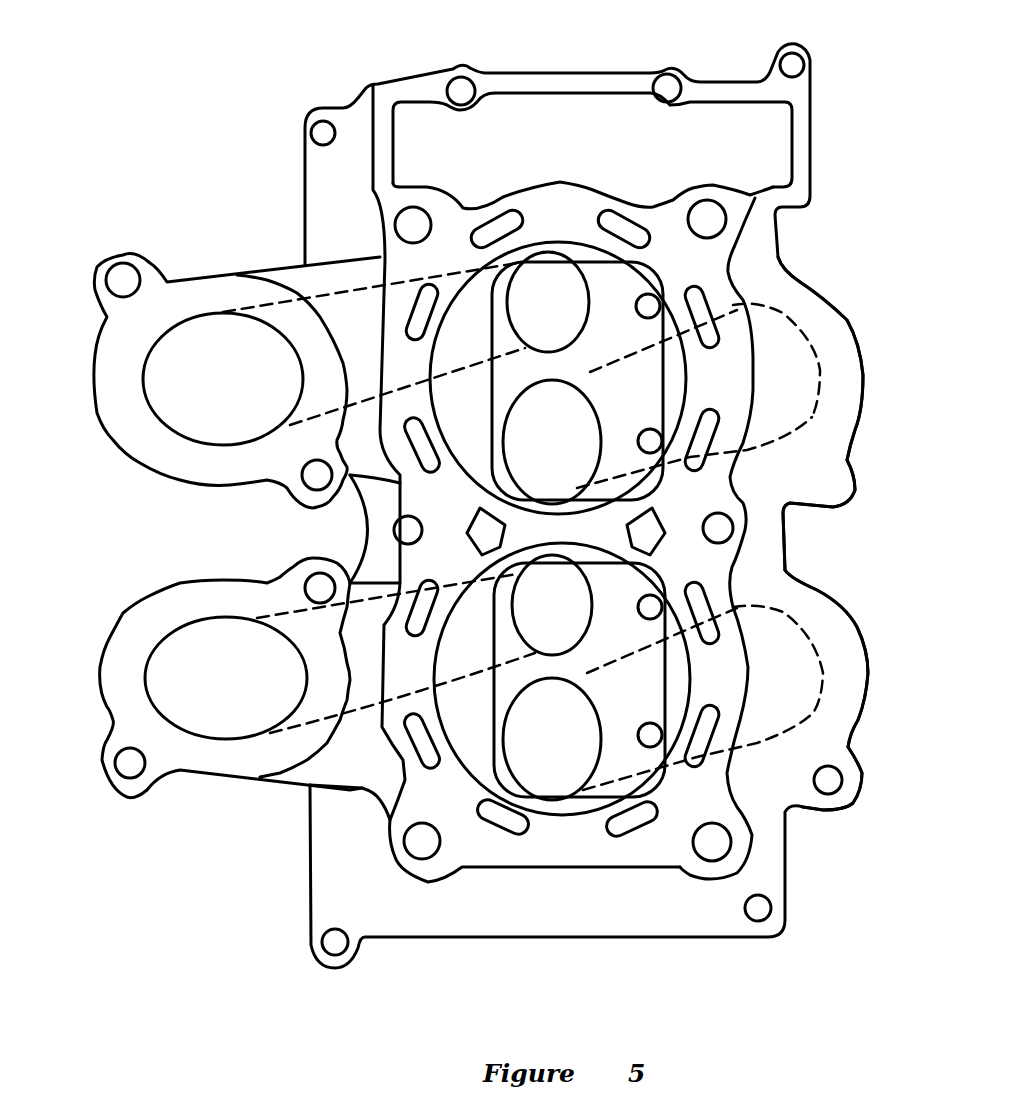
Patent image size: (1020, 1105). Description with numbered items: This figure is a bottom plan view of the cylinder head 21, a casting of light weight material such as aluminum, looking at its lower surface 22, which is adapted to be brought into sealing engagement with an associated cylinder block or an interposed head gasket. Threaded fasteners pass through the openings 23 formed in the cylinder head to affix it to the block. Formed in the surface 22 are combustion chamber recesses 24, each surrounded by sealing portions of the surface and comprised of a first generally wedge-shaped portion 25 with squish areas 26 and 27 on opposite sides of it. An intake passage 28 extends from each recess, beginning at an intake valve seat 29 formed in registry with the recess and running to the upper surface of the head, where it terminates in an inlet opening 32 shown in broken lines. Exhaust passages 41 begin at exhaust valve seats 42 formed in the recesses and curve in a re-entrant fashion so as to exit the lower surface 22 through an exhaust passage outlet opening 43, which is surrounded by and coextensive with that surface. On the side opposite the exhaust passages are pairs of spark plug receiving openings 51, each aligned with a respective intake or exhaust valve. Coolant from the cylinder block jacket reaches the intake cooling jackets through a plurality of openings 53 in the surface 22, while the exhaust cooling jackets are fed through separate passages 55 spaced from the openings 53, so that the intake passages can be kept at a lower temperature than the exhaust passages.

The cylinder head 21 is at (286, 130).
The lower surface 22 is at (387, 137).
The openings 23 is at (415, 213).
The combustion chamber recesses 24 is at (614, 290).
The first generally wedge-shaped portion 25 is at (575, 253).
The squish area 26 is at (454, 348).
The squish area 27 is at (677, 383).
The intake passage 28 is at (766, 441).
The intake valve seat 29 is at (595, 468).
The inlet opening 32 is at (807, 347).
The exhaust passages 41 is at (209, 393).
The exhaust valve seats 42 is at (577, 268).
The exhaust passage outlet opening 43 is at (147, 385).
The spark plug receiving openings 51 is at (642, 313).
The openings 53 is at (410, 300).
The passages 55 is at (348, 526).